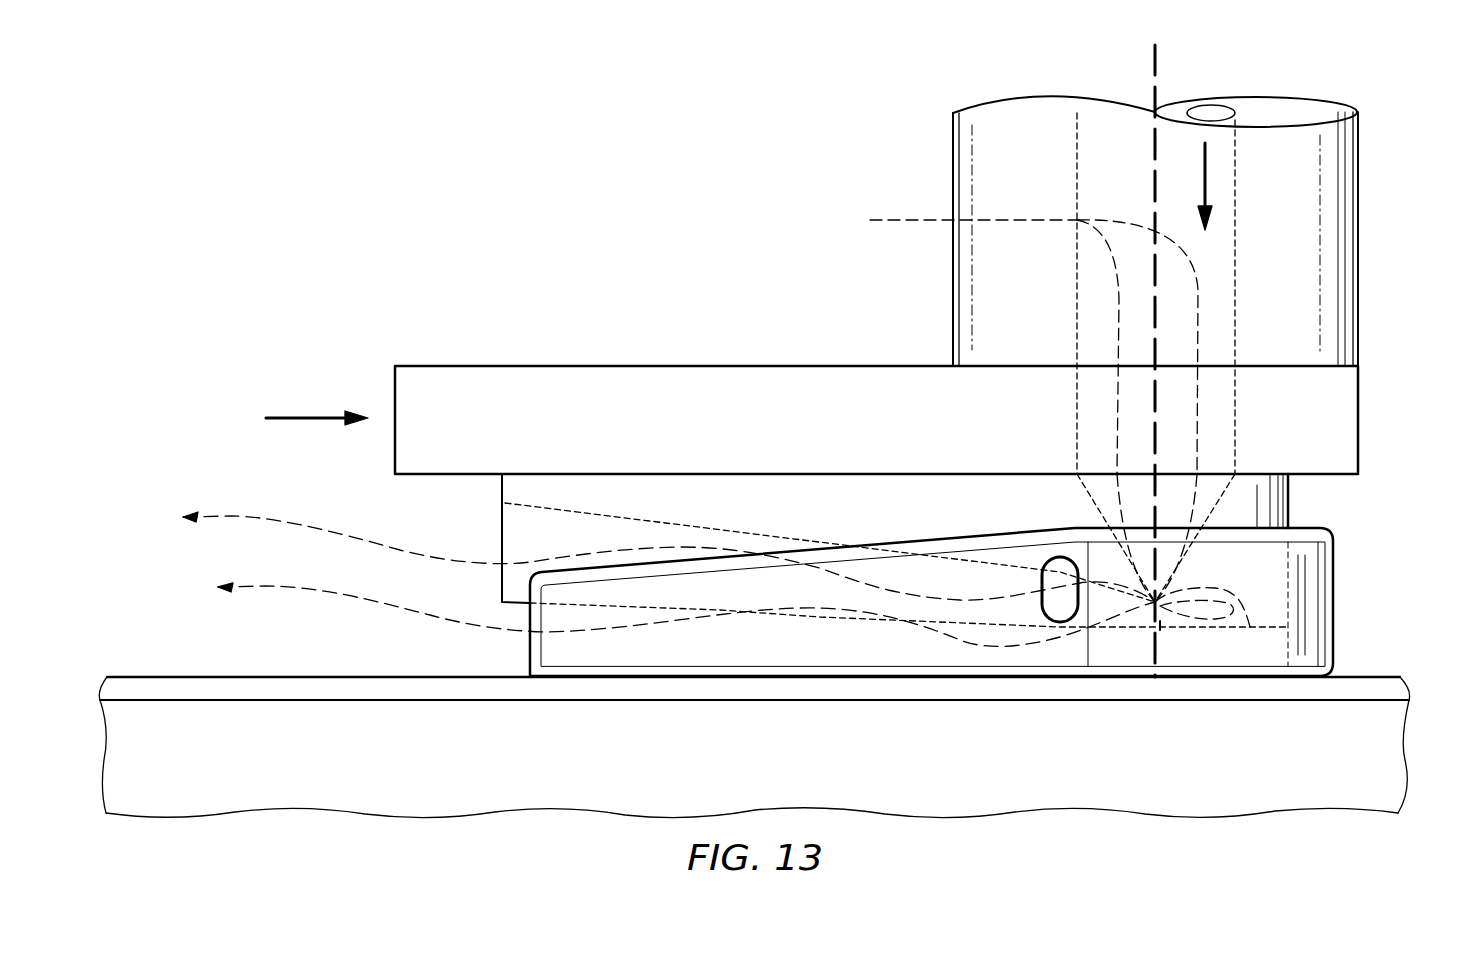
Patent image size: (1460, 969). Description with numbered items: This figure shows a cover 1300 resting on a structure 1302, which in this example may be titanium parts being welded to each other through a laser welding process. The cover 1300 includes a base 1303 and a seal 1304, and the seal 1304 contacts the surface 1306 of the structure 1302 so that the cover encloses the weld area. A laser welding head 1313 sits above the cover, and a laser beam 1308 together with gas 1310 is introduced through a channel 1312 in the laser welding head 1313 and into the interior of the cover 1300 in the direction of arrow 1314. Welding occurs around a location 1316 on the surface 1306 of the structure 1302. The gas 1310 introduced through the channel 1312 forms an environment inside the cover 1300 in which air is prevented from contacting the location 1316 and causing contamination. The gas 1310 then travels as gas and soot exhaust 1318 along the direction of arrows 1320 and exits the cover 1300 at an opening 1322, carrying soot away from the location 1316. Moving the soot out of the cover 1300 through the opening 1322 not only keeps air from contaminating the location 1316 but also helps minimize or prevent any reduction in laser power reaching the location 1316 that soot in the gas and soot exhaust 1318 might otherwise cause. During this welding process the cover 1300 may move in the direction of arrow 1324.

The cover 1300 is at (714, 358).
The structure 1302 is at (782, 770).
The base 1303 is at (1289, 500).
The seal 1304 is at (1335, 600).
The surface 1306 is at (1372, 676).
The laser beam 1308 is at (1154, 94).
The gas 1310 is at (1052, 396).
The channel 1312 is at (1208, 108).
The laser welding head 1313 is at (1359, 244).
The arrow 1314 is at (1207, 176).
The location 1316 is at (1160, 680).
The gas and soot exhaust 1318 is at (243, 517).
The arrows 1320 is at (184, 516).
The opening 1322 is at (502, 537).
The arrow 1324 is at (306, 416).